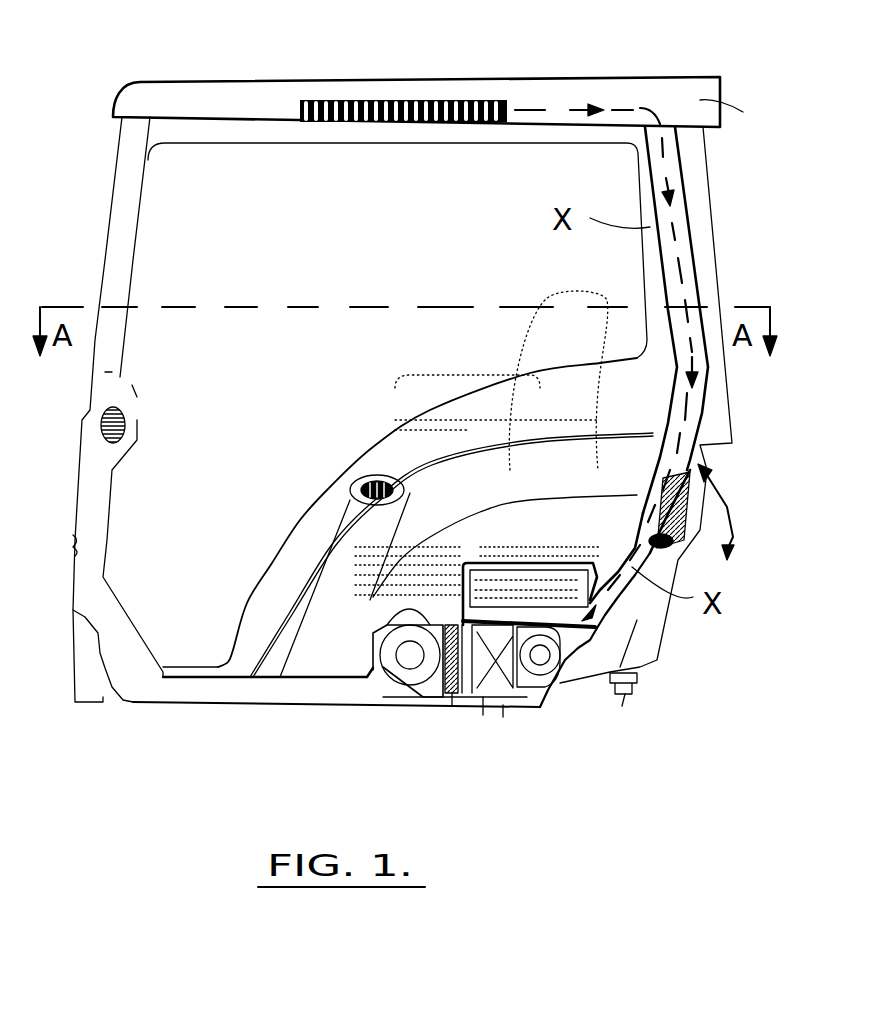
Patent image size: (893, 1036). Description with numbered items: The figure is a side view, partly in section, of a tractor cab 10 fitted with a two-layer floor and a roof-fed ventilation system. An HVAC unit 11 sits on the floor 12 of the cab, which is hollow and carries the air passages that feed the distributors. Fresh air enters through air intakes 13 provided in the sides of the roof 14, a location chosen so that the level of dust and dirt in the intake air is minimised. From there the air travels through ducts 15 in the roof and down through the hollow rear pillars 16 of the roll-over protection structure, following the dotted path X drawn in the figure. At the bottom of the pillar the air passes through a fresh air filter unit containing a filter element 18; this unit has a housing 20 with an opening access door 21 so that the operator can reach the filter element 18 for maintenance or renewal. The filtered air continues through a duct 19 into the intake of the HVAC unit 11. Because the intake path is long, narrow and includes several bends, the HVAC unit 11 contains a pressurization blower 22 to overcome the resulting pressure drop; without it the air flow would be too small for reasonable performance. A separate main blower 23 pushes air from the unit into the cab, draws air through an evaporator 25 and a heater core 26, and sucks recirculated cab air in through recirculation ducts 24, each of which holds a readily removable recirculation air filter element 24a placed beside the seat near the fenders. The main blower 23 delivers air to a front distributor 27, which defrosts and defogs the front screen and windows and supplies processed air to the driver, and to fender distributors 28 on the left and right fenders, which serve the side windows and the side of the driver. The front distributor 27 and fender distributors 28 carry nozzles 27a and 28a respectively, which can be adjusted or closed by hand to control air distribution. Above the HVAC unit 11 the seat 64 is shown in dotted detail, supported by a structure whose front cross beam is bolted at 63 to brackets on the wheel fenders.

The tractor cab 10 is at (244, 170).
The HVAC unit 11 is at (459, 681).
The floor 12 is at (177, 687).
The air intakes 13 is at (357, 96).
The roof 14 is at (487, 80).
The ducts 15 is at (649, 358).
The hollow rear pillars 16 is at (690, 250).
The filter element 18 is at (672, 495).
The duct 19 is at (625, 572).
The housing 20 is at (683, 523).
The access door 21 is at (735, 522).
The pressurization blower 22 is at (543, 660).
The main blower 23 is at (423, 697).
The recirculation ducts 24 is at (627, 573).
The recirculation air filter element 24a is at (582, 592).
The evaporator 25 is at (498, 678).
The heater core 26 is at (455, 683).
The front distributor 27 is at (93, 500).
The nozzles 27a is at (125, 433).
The fender distributors 28 is at (333, 592).
The nozzles 28a is at (367, 477).
The bolted connection 63 is at (375, 640).
The seat 64 is at (580, 395).